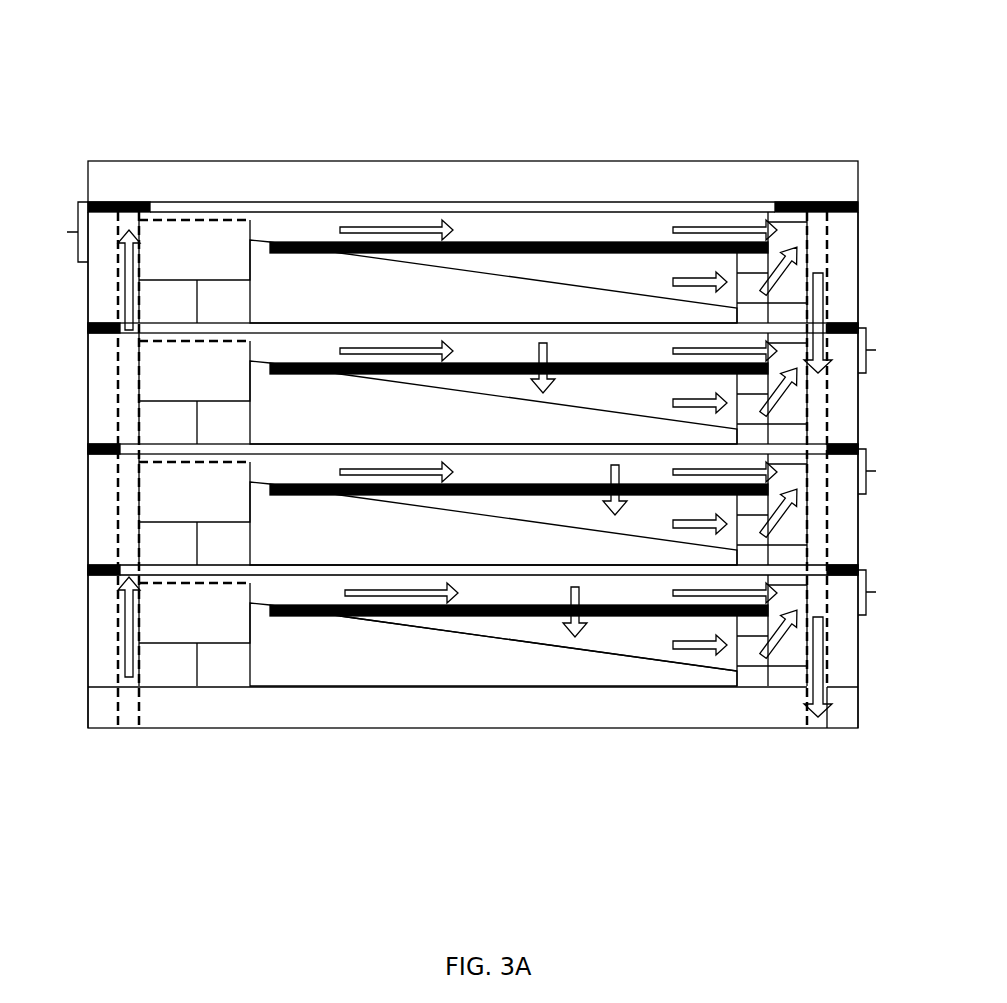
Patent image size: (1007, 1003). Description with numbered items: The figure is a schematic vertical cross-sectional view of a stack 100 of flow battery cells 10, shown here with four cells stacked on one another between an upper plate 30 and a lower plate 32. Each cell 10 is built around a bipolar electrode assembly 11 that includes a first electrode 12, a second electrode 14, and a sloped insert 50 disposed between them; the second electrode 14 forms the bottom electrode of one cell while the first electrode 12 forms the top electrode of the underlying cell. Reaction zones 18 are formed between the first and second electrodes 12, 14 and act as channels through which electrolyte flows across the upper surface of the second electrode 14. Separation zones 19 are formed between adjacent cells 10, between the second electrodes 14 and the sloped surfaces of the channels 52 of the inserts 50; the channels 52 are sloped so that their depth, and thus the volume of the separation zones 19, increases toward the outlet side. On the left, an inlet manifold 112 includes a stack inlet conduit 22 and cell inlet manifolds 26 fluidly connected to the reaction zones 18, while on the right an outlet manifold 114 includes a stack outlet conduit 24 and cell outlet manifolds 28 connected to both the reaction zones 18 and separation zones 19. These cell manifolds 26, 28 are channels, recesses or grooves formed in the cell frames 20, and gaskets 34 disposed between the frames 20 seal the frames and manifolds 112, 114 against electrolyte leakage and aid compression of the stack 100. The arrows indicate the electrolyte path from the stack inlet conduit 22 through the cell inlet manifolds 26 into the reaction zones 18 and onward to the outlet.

The stack 100 is at (480, 101).
The inlet manifold 112 is at (232, 88).
The outlet manifold 114 is at (888, 98).
The stack inlet conduit 22 is at (120, 218).
The cell inlet manifolds 26 is at (168, 220).
The cell outlet manifolds 28 is at (798, 212).
The stack outlet conduit 24 is at (830, 212).
The upper plate 30 is at (471, 191).
The lower plate 32 is at (494, 715).
The flow battery cell 10 is at (473, 408).
The cell frames 20 is at (208, 271).
The sloped insert 50 is at (321, 303).
The reaction zones 18 is at (668, 241).
The separation zones 19 is at (668, 293).
The gaskets 34 is at (105, 577).
The second electrode 14 is at (457, 490).
The first electrode 12 is at (512, 578).
The channels 52 is at (583, 647).
The bipolar electrode assembly 11 is at (412, 836).